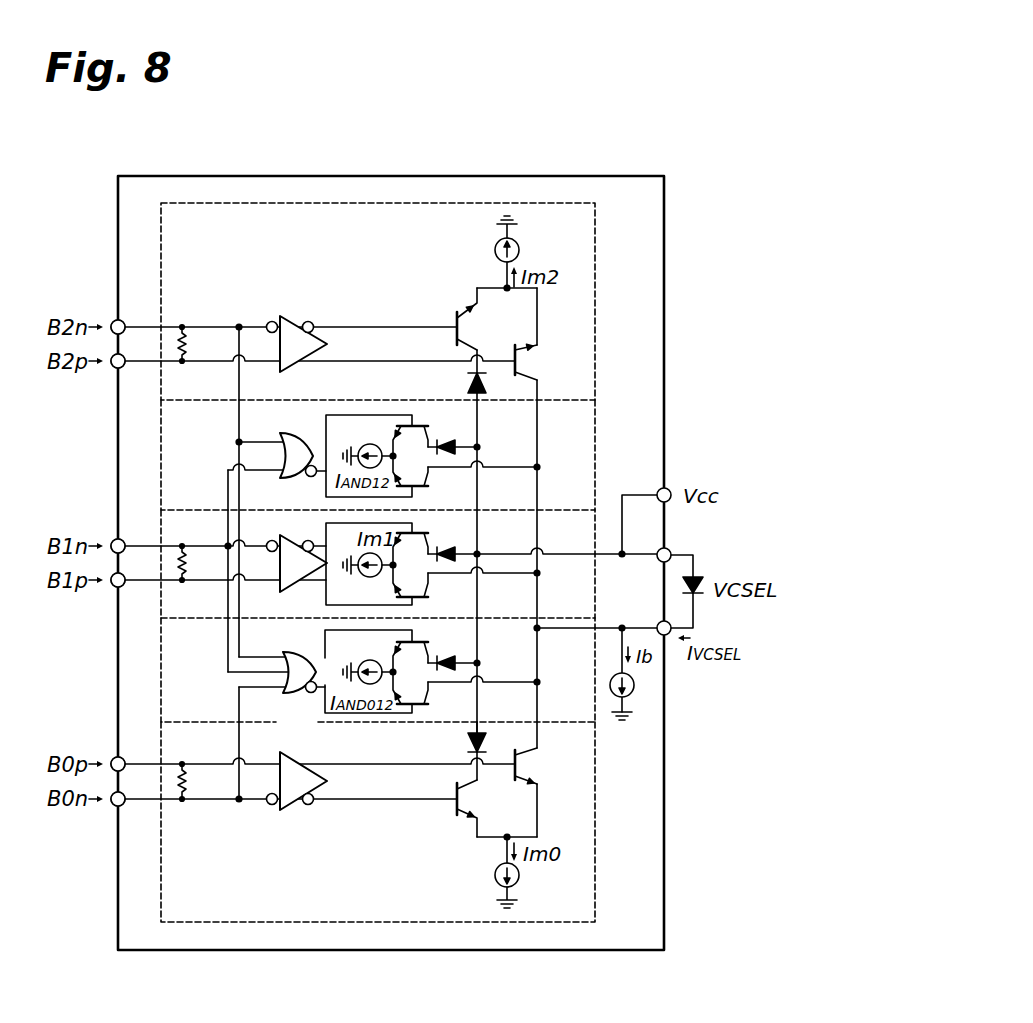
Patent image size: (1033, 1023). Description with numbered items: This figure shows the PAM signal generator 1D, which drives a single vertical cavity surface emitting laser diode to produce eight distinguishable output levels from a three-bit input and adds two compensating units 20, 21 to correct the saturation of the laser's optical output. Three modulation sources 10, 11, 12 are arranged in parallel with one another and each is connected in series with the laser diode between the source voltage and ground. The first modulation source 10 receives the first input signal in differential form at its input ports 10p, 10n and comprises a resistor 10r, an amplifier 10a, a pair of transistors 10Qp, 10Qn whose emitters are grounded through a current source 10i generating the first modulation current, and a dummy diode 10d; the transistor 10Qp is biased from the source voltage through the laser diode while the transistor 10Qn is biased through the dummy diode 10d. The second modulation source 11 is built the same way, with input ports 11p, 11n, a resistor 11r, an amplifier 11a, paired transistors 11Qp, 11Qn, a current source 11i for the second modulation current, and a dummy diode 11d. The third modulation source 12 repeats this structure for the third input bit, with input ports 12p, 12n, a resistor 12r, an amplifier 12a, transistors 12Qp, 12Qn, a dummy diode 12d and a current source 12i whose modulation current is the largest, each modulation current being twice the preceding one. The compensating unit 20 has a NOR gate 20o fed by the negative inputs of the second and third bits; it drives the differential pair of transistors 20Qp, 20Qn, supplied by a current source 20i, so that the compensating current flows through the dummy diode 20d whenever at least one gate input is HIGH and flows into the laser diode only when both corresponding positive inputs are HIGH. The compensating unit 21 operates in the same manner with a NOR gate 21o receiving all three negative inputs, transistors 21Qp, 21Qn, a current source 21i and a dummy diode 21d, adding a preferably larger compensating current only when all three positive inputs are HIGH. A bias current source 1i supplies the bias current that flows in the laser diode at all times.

The PAM signal generator 1D is at (682, 136).
The modulation source 12 is at (160, 253).
The compensating unit 20 is at (160, 455).
The modulation source 11 is at (160, 603).
The compensating unit 21 is at (160, 684).
The modulation source 10 is at (160, 886).
The inverted input terminal of second drive unit 12n is at (113, 321).
The non-inverted input terminal of second drive unit 12p is at (112, 367).
The second input port 11n is at (113, 540).
The second input port 11p is at (112, 586).
The first input port 10p is at (113, 757).
The first input port 10n is at (112, 806).
The termination resistor 12r is at (187, 342).
The resistor 11r is at (192, 567).
The resistor 10r is at (190, 785).
The differential amplifier 12a is at (292, 316).
The amplifier 11a is at (288, 578).
The amplifier 10a is at (288, 806).
The NOR gate 20o is at (295, 434).
The NOR gate 21o is at (303, 693).
The transistor 12Qn is at (456, 316).
The transistor 12Qp is at (530, 365).
The diode 12d is at (467, 388).
The current source 12i is at (495, 251).
The negative phase transistor 20Qn is at (400, 422).
The transistor 20Qp is at (428, 488).
The current source 20i is at (367, 444).
The dummy diode 20d is at (453, 443).
The transistor 11Qn is at (402, 530).
The transistor 11Qp is at (428, 600).
The second current source 11i is at (368, 578).
The second dummy diode 11d is at (453, 551).
The transistor 21Qn is at (400, 640).
The transistor 21Qp is at (425, 705).
The current source 21i is at (369, 661).
The diode 21d is at (457, 660).
The first dummy diode 10d is at (467, 742).
The transistor 10Qn is at (456, 808).
The transistor 10Qp is at (529, 769).
The first current source 10i is at (495, 875).
The current source 1i is at (632, 694).